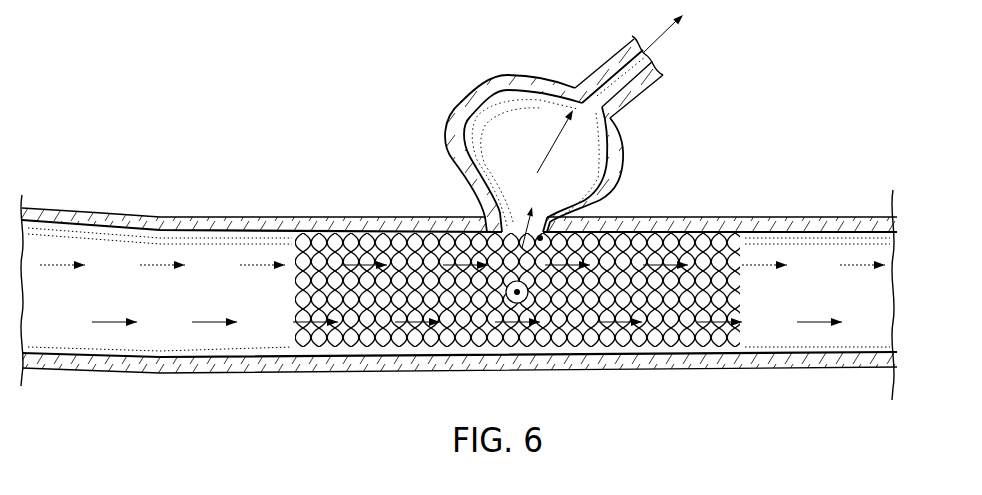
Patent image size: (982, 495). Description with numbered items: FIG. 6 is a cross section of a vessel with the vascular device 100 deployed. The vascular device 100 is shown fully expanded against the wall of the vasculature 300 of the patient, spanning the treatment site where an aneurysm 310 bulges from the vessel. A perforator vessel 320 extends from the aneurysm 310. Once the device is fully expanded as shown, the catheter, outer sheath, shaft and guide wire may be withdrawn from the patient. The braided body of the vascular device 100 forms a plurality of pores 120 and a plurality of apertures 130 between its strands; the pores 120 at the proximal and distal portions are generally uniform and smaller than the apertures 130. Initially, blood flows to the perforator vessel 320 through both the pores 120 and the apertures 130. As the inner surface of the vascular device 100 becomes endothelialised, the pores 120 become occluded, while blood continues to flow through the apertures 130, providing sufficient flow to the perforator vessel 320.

The vascular device 100 is at (290, 250).
The pores 120 is at (542, 237).
The apertures 130 is at (515, 290).
The vasculature 300 is at (723, 210).
The aneurysm 310 is at (628, 129).
The perforator vessel 320 is at (601, 50).